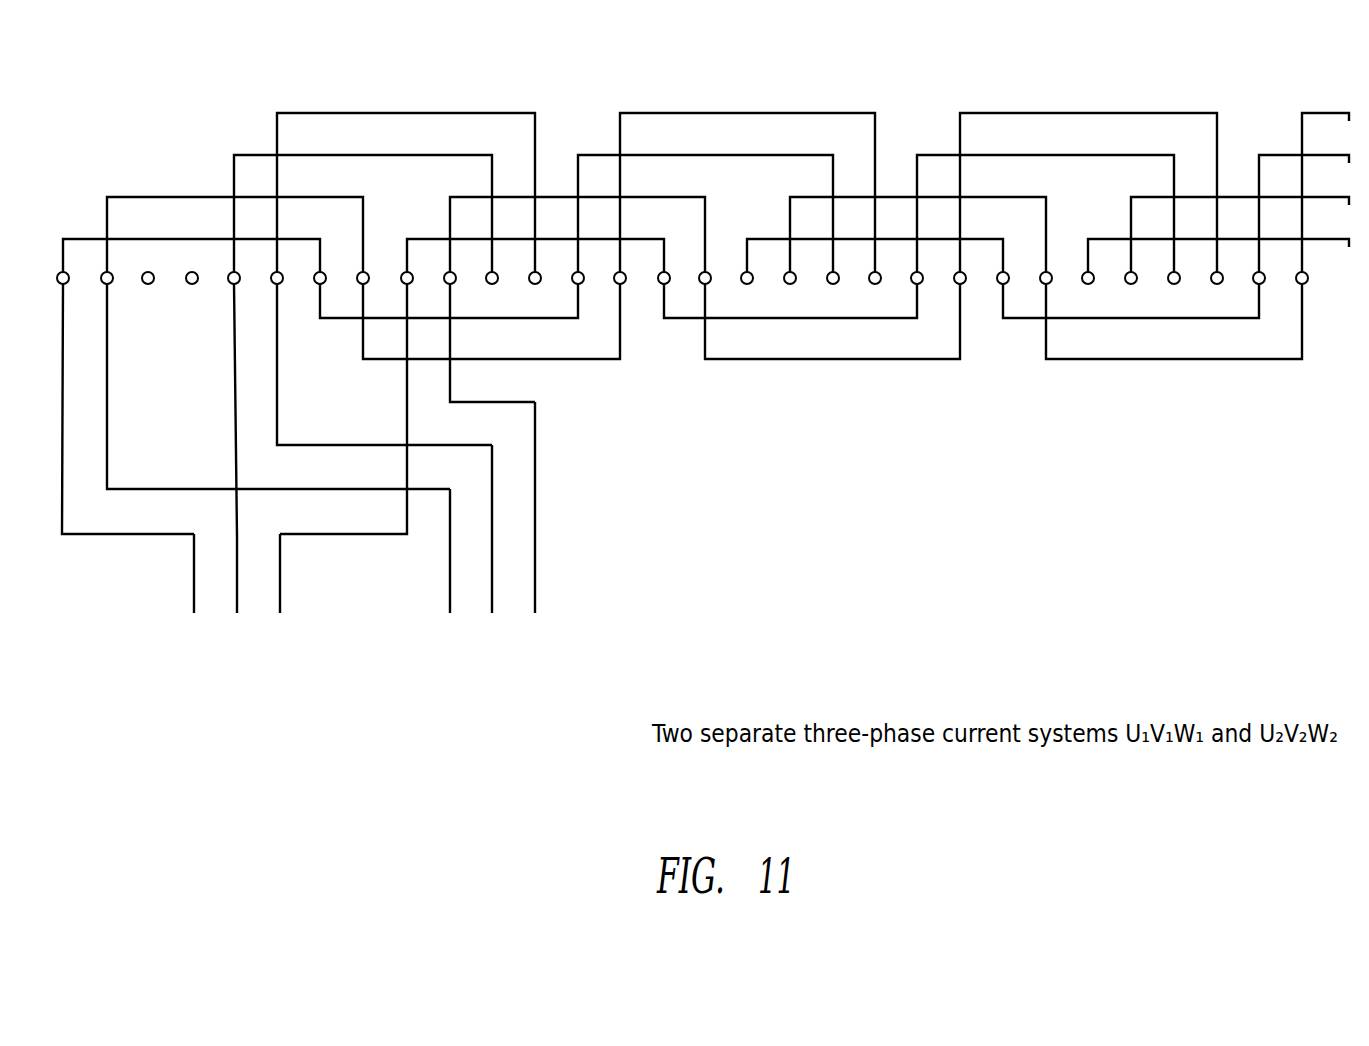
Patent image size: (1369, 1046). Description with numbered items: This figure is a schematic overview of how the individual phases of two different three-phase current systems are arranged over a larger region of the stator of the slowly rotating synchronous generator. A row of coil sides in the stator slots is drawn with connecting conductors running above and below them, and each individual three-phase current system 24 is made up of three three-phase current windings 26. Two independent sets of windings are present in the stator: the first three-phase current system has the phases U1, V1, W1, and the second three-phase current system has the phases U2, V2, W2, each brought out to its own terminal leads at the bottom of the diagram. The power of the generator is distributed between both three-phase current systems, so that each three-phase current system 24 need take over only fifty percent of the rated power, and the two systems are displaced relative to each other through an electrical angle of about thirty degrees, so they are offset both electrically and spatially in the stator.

The three-phase current system 24 is at (580, 542).
The three-phase current windings 26 is at (322, 530).
The phase U winding of first three-phase current system U1 is at (198, 596).
The phase V winding of first three-phase current system V1 is at (241, 597).
The phase W winding of first three-phase current system W1 is at (283, 596).
The phase U winding of second three-phase current system U2 is at (453, 573).
The phase V winding of second three-phase current system V2 is at (495, 551).
The phase W winding of second three-phase current system W2 is at (538, 530).